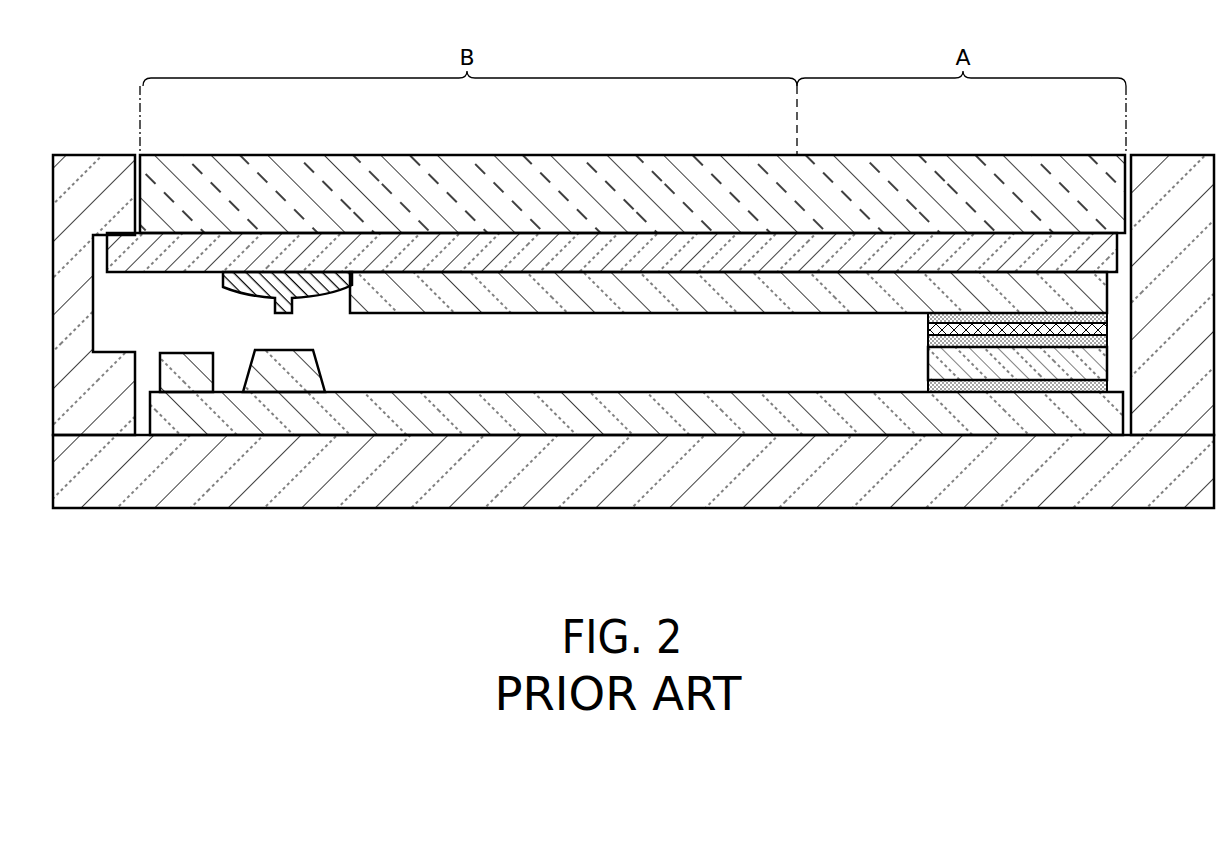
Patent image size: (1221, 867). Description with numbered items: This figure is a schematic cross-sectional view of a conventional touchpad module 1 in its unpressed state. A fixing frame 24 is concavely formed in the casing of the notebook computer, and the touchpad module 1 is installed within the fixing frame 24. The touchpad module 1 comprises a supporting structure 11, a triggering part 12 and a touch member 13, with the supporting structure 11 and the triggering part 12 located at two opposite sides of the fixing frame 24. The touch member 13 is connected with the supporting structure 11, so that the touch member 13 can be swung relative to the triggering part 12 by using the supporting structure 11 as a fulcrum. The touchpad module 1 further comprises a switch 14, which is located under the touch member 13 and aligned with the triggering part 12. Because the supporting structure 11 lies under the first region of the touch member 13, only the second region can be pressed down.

The touchpad module 1 is at (1042, 52).
The supporting structure 11 is at (1017, 365).
The triggering part 12 is at (292, 370).
The touch member 13 is at (952, 245).
The switch 14 is at (283, 278).
The fixing frame 24 is at (92, 170).